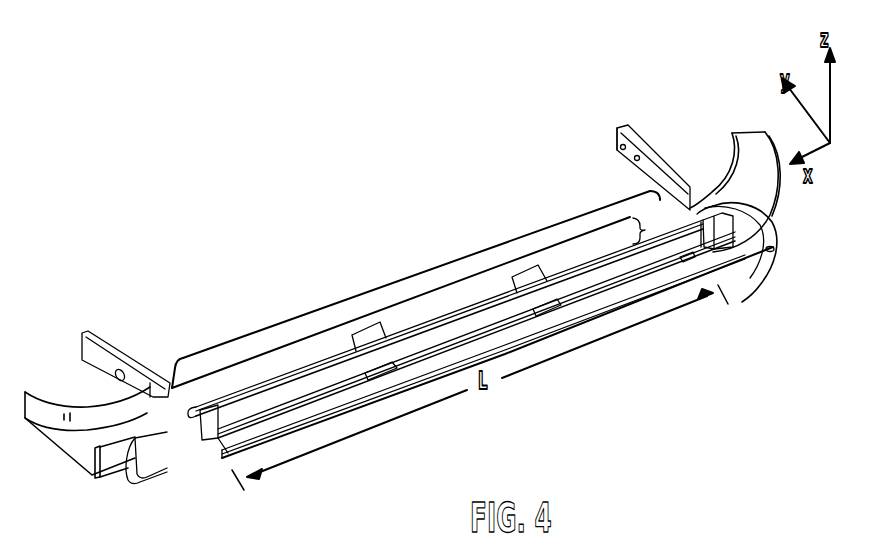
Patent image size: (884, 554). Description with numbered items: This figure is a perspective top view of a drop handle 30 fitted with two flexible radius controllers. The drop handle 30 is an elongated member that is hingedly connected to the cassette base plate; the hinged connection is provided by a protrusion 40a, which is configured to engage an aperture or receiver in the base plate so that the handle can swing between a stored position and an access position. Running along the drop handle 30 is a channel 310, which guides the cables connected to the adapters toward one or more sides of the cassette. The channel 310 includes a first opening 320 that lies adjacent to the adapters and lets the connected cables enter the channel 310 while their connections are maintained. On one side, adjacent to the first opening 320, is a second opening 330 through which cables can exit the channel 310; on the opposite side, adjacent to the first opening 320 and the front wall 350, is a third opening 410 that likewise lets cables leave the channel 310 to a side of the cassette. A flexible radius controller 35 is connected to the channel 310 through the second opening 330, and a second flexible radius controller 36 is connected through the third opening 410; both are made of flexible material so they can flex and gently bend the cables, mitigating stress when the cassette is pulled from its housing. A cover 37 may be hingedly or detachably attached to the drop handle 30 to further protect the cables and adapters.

The drop handle 30 is at (427, 213).
The channel 310 is at (572, 258).
The first opening 320 is at (407, 275).
The second opening 330 is at (143, 433).
The front wall 350 is at (631, 252).
The flexible radius controller 35 is at (59, 452).
The second flexible radius controller 36 is at (778, 186).
The cover 37 is at (537, 344).
The protrusion 40a is at (614, 143).
The third opening 410 is at (722, 220).